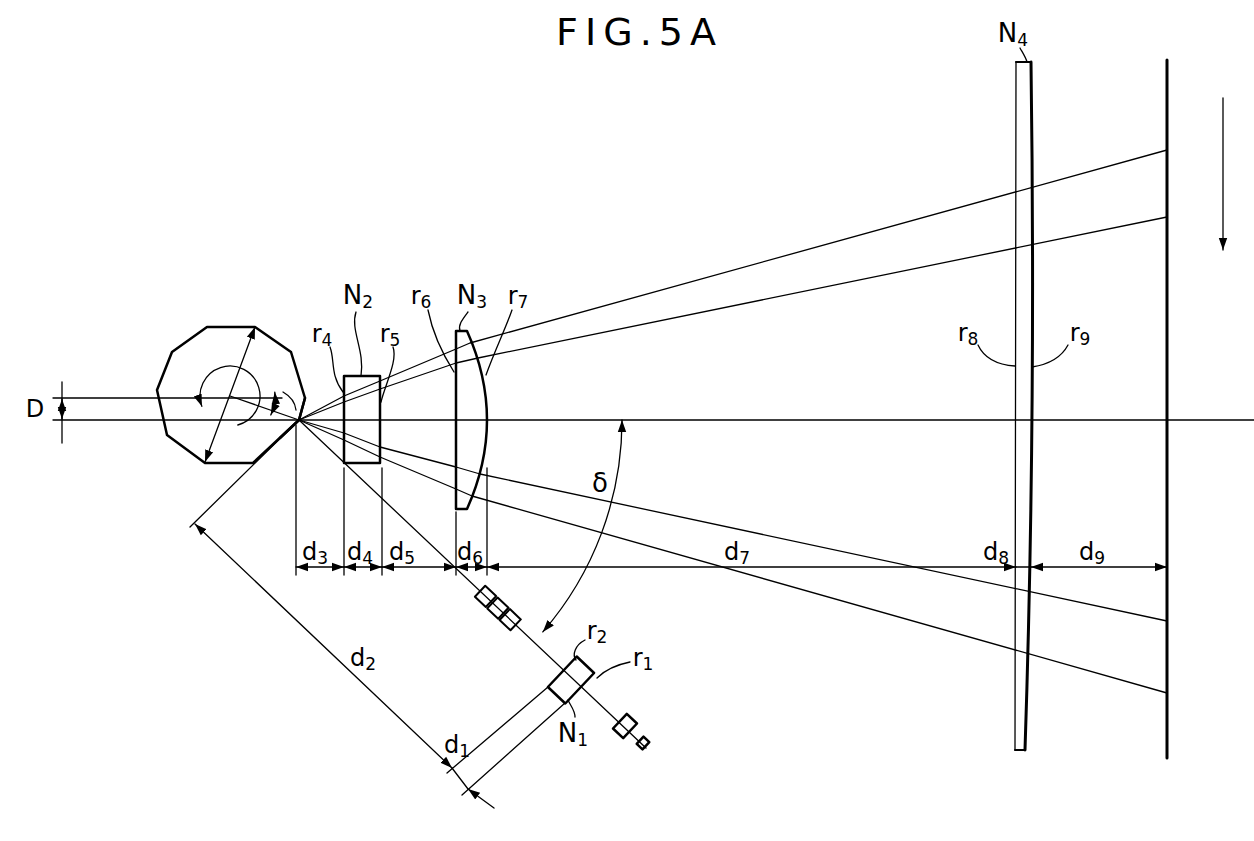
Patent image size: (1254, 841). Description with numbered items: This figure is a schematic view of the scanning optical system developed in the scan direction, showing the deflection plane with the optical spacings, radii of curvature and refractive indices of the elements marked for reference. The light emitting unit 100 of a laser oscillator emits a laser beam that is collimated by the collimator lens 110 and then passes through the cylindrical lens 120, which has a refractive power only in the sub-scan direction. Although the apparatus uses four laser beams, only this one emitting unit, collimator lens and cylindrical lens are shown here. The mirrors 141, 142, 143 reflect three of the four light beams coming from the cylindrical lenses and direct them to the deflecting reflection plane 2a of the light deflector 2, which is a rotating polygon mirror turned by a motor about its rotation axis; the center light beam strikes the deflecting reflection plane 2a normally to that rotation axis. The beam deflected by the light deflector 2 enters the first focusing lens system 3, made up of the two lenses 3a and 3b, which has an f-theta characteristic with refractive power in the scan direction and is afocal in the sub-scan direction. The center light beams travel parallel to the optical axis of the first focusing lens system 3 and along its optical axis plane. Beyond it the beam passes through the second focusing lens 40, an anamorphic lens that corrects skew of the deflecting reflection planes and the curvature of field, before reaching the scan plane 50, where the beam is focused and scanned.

The light deflector 2 is at (229, 327).
The deflecting reflection plane 2a is at (298, 445).
The first focusing lens system 3 is at (505, 230).
The lens 3a is at (362, 346).
The lens 3b is at (471, 369).
The second focusing lens 40 is at (1017, 98).
The scan plane 50 is at (1166, 74).
The light emitting unit 100 is at (650, 743).
The collimator lens 110 is at (638, 718).
The cylindrical lens 120 is at (594, 672).
The mirror 141 is at (507, 628).
The mirror 142 is at (494, 616).
The mirror 143 is at (476, 594).